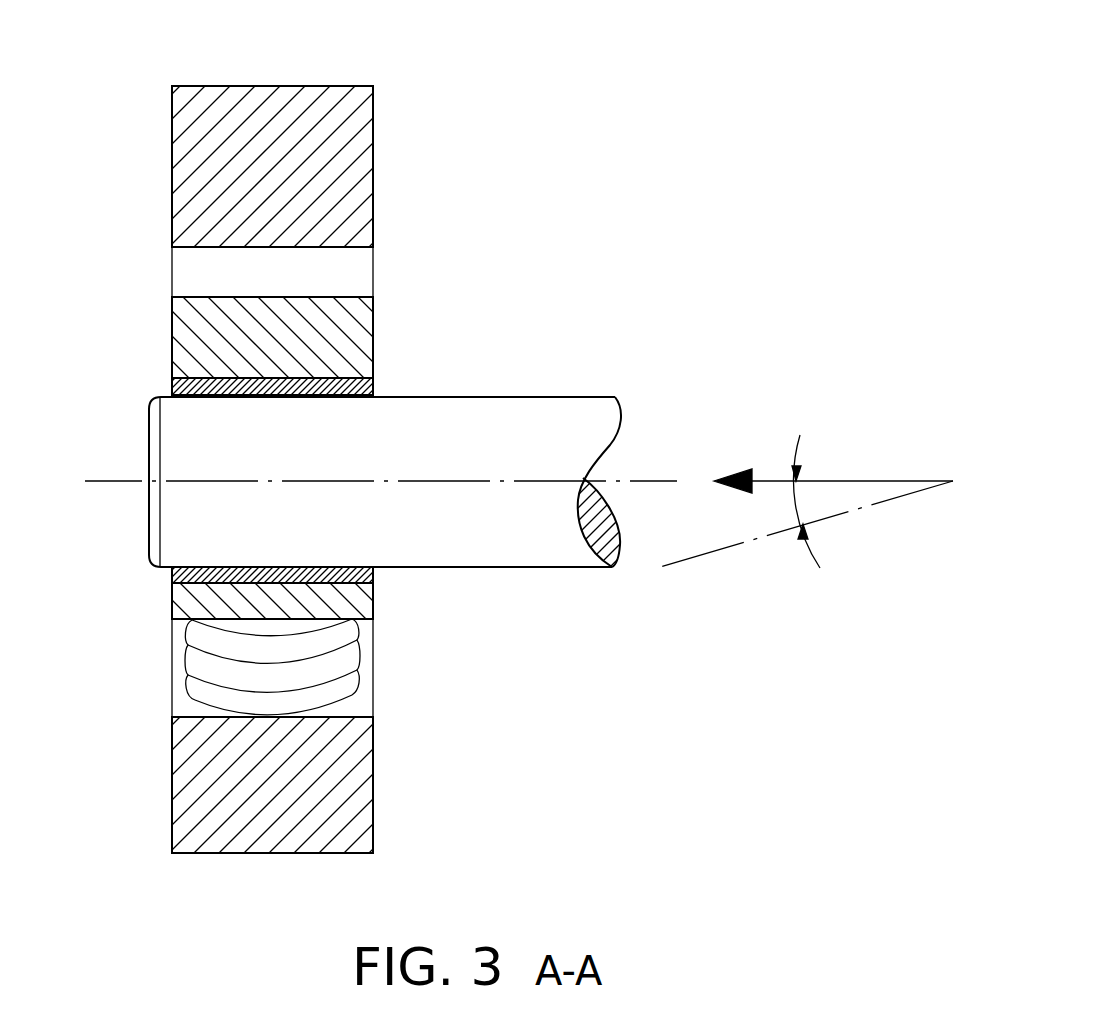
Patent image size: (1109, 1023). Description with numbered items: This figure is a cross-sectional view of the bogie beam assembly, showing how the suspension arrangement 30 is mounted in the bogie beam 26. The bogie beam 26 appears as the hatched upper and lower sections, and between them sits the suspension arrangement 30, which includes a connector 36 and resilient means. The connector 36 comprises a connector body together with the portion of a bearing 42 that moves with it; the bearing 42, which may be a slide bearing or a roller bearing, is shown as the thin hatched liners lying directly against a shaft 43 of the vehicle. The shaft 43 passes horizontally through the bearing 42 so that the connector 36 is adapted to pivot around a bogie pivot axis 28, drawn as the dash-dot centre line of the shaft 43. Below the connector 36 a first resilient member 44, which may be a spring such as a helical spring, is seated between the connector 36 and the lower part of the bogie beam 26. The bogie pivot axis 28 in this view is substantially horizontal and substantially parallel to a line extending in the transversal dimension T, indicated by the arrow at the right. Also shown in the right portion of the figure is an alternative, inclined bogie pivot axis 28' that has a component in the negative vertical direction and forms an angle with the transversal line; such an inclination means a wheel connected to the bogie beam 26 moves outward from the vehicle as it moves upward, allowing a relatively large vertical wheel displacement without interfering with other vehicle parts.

The bogie beam 26 is at (172, 180).
The connector 36 is at (172, 350).
The bearing 42 is at (172, 387).
The suspension arrangement 30 is at (172, 607).
The first resilient member 44 is at (172, 663).
The bogie pivot axis 28 is at (381, 414).
The shaft 43 is at (555, 397).
The inclined bogie pivot axis 28' is at (803, 556).
The transversal dimension T is at (833, 458).